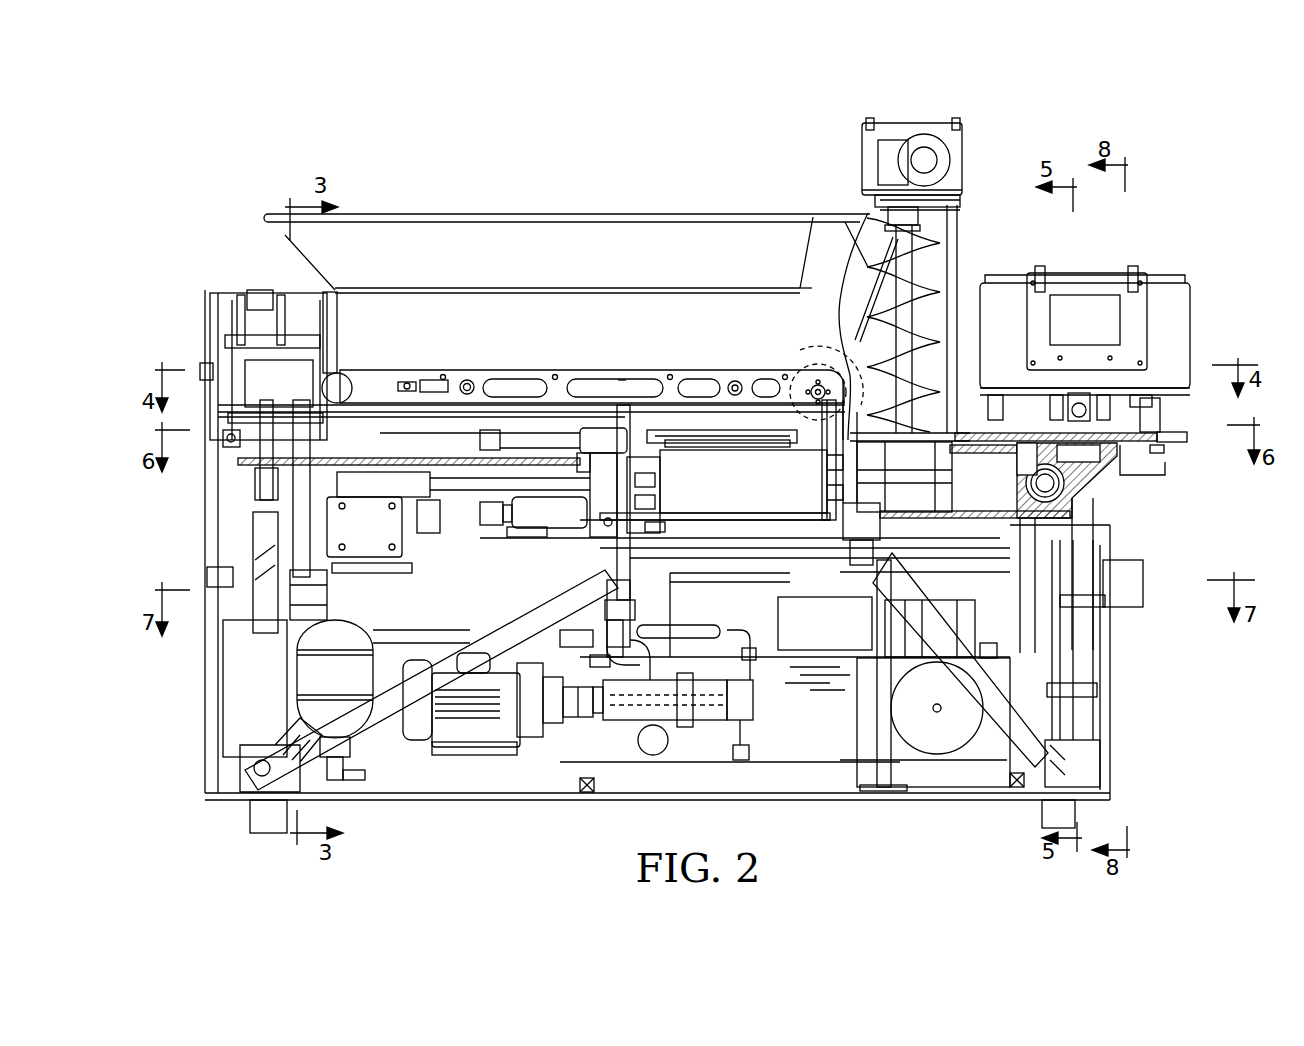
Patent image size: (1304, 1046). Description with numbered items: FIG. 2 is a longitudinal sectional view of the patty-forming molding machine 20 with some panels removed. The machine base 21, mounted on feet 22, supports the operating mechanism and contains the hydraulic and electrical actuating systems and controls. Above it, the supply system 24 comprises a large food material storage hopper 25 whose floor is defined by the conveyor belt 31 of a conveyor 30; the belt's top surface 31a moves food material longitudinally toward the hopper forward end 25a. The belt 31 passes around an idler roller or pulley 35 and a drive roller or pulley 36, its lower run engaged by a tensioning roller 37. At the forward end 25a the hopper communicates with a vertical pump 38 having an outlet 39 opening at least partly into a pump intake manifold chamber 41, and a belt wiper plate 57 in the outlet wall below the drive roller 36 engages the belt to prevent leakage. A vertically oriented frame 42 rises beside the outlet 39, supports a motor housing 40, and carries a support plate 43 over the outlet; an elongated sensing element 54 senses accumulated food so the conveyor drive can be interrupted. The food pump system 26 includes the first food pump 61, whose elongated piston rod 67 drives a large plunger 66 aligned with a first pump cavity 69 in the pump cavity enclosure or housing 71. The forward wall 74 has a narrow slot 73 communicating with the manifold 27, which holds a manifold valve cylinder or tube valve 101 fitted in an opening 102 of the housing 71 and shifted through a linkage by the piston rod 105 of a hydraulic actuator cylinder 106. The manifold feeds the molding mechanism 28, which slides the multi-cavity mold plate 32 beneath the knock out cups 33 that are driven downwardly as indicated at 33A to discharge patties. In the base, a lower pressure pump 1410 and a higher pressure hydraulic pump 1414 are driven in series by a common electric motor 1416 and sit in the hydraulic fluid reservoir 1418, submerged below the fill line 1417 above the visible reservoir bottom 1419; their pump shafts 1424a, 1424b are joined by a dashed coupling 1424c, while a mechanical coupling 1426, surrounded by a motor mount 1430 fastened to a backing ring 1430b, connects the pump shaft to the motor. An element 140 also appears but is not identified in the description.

The molding machine 20 is at (722, 164).
The machine base 21 is at (1122, 640).
The feet 22 is at (1075, 812).
The supply system 24 is at (455, 206).
The food material storage hopper 25 is at (498, 213).
The hopper forward end 25a is at (816, 297).
The food pump system 26 is at (766, 464).
The manifold 27 is at (1078, 495).
The molding mechanism 28 is at (1134, 456).
The conveyor 30 is at (549, 372).
The conveyor belt 31 is at (471, 377).
The top surface 31a is at (436, 378).
The multi-cavity mold plate 32 is at (1010, 445).
The knock out cups 33 is at (1160, 435).
The downward drive direction of knock out cups 33A is at (1133, 448).
The idler roller or pulley 35 is at (345, 378).
The drive roller or pulley 36 is at (794, 362).
The tensioning roller 37 is at (622, 403).
The vertical pump 38 is at (876, 256).
The outlet 39 is at (857, 422).
The motor housing 40 is at (962, 160).
The pump intake manifold chamber 41 is at (905, 457).
The vertically oriented frame 42 is at (957, 273).
The support plate 43 is at (945, 191).
The sensing element 54 is at (864, 293).
The belt wiper plate 57 is at (832, 360).
The first food pump 61 is at (769, 490).
The plunger 66 is at (711, 460).
The piston rod 67 is at (650, 467).
The first pump cavity 69 is at (967, 512).
The pump cavity enclosure or housing 71 is at (942, 525).
The slot 73 is at (1024, 480).
The forward wall 74 is at (1017, 458).
The manifold valve cylinder or tube valve 101 is at (1037, 448).
The opening 102 is at (1050, 490).
The piston rod 105 is at (677, 518).
The hydraulic actuator cylinder 106 is at (473, 520).
The control panel 140 is at (1204, 270).
The lower pressure pump 1410 is at (606, 726).
The higher pressure hydraulic pump 1414 is at (705, 732).
The electric motor 1416 is at (525, 735).
The hydraulic fluid fill line 1417 is at (857, 655).
The hydraulic fluid reservoir 1418 is at (805, 770).
The reservoir bottom 1419 is at (848, 774).
The pump shaft 1424a is at (651, 745).
The pump shaft 1424b is at (742, 727).
The coupling 1424c is at (680, 735).
The mechanical coupling 1426 is at (571, 716).
The motor mount 1430 is at (563, 677).
The backing ring 1430b is at (600, 765).